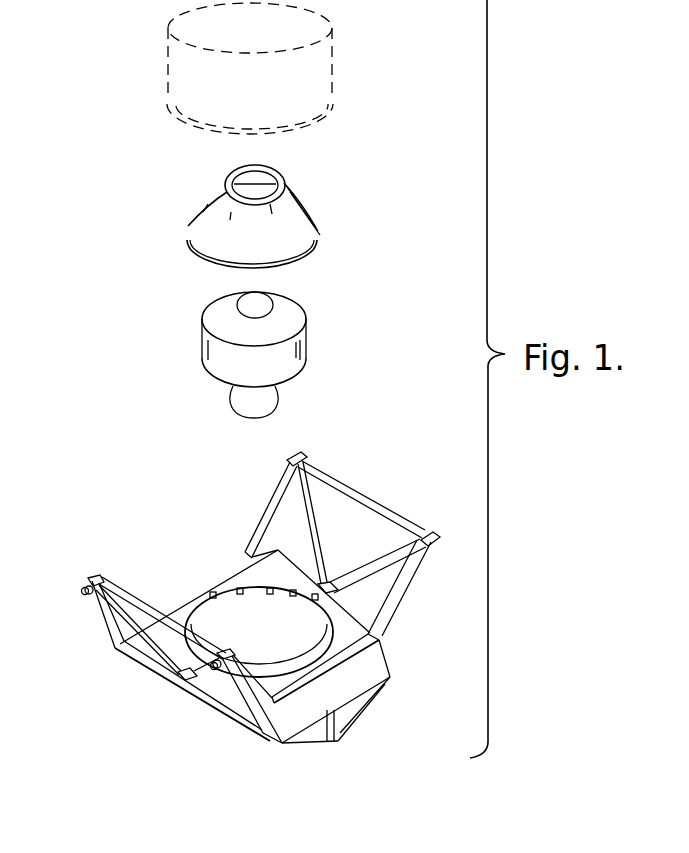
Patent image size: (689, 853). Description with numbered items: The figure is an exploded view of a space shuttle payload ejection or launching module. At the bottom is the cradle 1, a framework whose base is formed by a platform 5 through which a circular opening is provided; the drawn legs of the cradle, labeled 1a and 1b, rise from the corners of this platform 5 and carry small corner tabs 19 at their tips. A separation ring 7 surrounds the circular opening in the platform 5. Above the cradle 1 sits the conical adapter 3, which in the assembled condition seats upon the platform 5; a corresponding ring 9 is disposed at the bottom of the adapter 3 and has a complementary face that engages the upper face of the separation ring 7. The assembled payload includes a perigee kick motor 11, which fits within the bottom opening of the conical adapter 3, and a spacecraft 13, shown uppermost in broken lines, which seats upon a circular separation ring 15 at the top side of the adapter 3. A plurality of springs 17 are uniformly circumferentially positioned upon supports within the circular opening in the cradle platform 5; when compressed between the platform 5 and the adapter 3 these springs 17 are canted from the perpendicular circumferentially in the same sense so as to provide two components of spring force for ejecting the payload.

The cradle 1 is at (252, 583).
The frame leg 1a is at (393, 646).
The frame leg 1b is at (267, 503).
The adapter 3 is at (309, 222).
The platform 5 is at (140, 648).
The separation ring 7 is at (230, 596).
The ring 9 is at (302, 260).
The perigee kick motor 11 is at (302, 325).
The spacecraft 13 is at (322, 99).
The circular separation ring 15 is at (286, 182).
The springs 17 is at (293, 595).
The corner tabs 19 is at (303, 458).